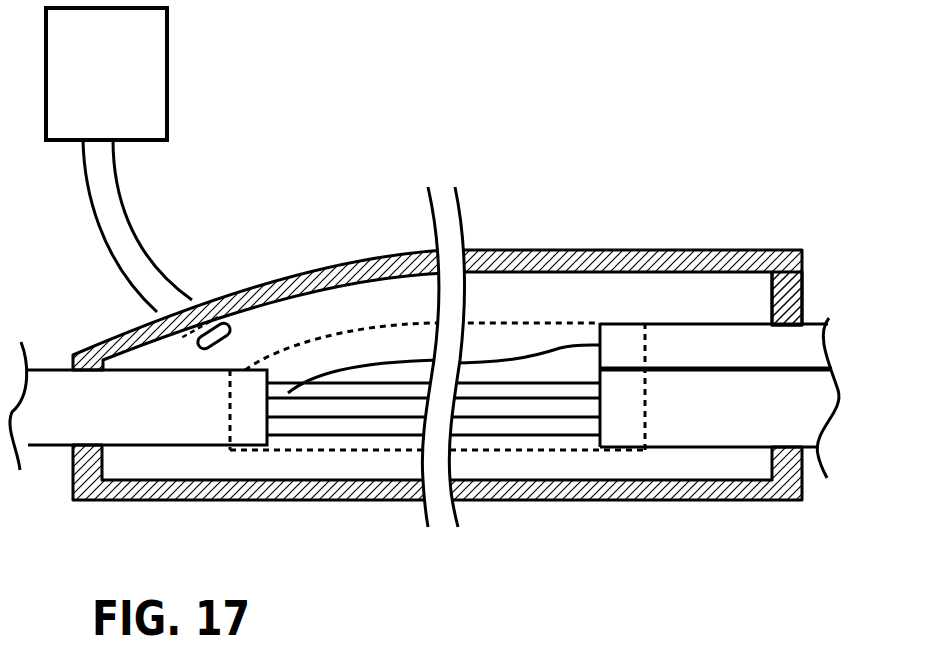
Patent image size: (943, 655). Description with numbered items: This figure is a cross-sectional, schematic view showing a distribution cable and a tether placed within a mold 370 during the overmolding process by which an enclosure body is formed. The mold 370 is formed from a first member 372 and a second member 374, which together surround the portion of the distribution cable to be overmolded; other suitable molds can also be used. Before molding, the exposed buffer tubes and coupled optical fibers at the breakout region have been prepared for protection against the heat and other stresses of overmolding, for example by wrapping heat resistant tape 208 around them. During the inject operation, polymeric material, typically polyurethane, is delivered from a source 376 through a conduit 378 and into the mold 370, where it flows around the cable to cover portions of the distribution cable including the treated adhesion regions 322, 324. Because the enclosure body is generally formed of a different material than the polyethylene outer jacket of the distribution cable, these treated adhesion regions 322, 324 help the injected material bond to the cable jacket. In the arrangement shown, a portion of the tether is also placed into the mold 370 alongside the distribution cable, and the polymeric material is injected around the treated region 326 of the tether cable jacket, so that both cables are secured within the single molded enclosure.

The source 376 is at (83, 87).
The conduit 378 is at (123, 223).
The heat resistant tape 208 is at (398, 328).
The mold 370 is at (538, 248).
The first member 372 is at (672, 250).
The second member 374 is at (543, 485).
The treated adhesion region 322 is at (105, 460).
The treated adhesion region 324 is at (772, 312).
The treated region 326 is at (650, 462).